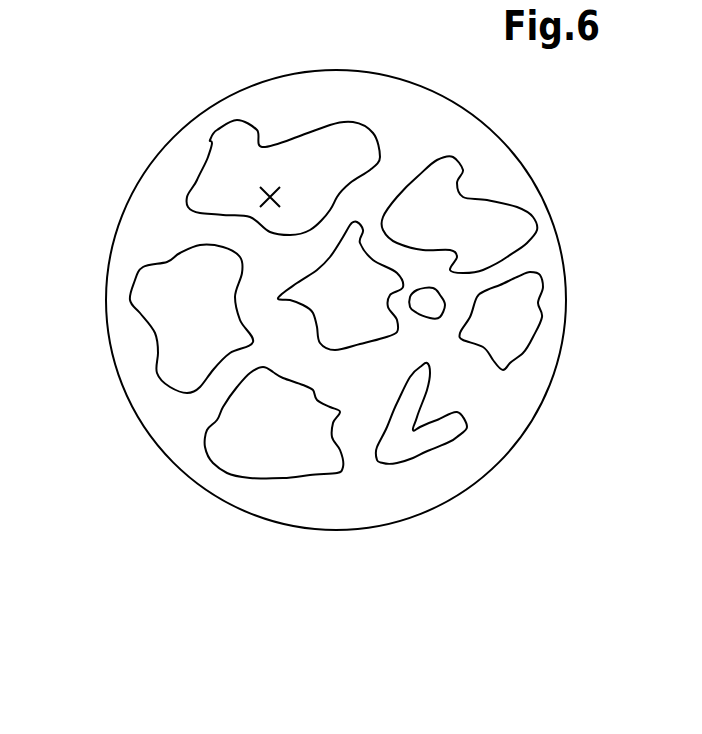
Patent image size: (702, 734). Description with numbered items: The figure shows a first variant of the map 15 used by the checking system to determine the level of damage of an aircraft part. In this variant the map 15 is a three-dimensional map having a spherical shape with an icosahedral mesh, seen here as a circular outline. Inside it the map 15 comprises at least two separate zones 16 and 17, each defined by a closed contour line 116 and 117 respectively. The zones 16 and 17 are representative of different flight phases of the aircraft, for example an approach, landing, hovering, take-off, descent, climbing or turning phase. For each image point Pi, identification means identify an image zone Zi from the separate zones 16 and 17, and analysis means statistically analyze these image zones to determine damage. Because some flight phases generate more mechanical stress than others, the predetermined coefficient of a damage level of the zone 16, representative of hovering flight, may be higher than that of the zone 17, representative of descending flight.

The map 15 is at (511, 150).
The zone 16 is at (281, 247).
The closed contour line 116 is at (210, 140).
The zone 17 is at (136, 304).
The closed contour line 117 is at (130, 300).